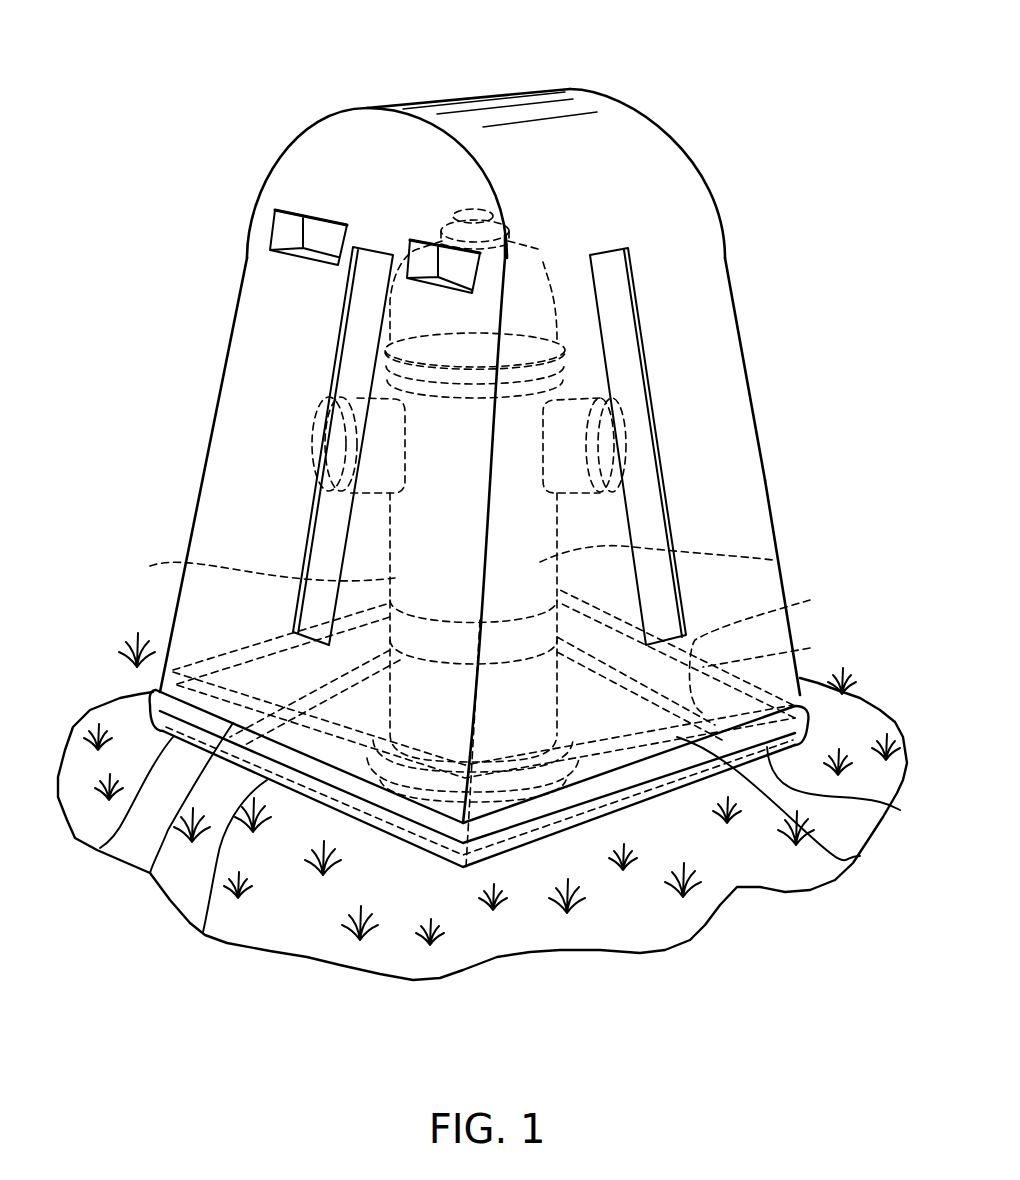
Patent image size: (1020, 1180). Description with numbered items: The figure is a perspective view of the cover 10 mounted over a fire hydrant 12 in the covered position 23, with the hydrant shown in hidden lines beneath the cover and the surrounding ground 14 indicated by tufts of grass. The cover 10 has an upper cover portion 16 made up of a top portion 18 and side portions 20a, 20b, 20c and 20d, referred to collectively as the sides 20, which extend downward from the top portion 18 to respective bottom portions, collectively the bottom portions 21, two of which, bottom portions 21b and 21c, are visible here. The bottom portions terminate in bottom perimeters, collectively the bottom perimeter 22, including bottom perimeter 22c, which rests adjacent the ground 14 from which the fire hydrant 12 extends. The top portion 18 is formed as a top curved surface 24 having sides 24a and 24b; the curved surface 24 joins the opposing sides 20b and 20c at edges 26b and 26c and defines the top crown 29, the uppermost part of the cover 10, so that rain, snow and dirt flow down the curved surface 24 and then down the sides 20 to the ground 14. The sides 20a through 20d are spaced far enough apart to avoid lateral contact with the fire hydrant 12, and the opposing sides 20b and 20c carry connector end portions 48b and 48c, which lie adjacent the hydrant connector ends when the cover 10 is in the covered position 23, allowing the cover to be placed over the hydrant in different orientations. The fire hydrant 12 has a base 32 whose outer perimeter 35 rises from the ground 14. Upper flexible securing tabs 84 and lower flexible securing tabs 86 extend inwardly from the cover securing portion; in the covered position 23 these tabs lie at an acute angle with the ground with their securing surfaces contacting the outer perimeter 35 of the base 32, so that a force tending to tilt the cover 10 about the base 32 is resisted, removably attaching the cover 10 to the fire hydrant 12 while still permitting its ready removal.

The cover 10 is at (750, 386).
The fire hydrant 12 is at (543, 262).
The ground 14 is at (730, 884).
The upper cover portion 16 is at (737, 315).
The top portion 18 is at (520, 100).
The side portions 20 is at (247, 416).
The side portion 20a is at (246, 248).
The side portion 20b is at (743, 538).
The side portion 20c is at (263, 293).
The side portion 20d is at (720, 228).
The bottom portions 21 is at (150, 692).
The bottom portion 21b is at (864, 856).
The bottom portion 21c is at (150, 873).
The bottom perimeter 22 is at (100, 849).
The bottom perimeter 22c is at (203, 932).
The covered position 23 is at (153, 513).
The top curved surface 24 is at (580, 103).
The side of curved surface 24a is at (418, 108).
The side of curved surface 24b is at (603, 153).
The edge 26b is at (637, 107).
The edge 26c is at (373, 117).
The top crown 29 is at (473, 107).
The base 32 is at (150, 566).
The outer perimeter 35 is at (773, 560).
The connector end portion 48b is at (620, 450).
The connector end portion 48c is at (232, 462).
The upper flexible securing tabs 84 is at (810, 600).
The lower flexible securing tabs 86 is at (810, 648).